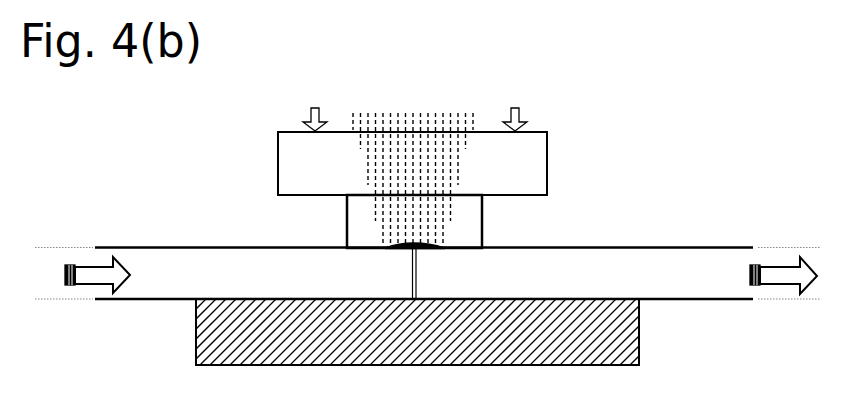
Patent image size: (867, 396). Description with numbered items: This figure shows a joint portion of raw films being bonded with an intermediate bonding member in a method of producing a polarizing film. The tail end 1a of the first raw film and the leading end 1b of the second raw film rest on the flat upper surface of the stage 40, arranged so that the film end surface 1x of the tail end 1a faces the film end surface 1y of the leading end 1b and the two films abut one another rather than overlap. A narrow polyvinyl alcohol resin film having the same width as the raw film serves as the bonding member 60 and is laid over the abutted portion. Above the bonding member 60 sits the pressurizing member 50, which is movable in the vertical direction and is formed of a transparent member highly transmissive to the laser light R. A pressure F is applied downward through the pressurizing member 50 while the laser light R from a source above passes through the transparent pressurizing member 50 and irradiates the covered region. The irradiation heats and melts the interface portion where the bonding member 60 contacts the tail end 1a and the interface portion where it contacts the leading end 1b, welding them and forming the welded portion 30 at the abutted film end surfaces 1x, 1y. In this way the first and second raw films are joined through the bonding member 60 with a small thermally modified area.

The tail end of the first raw film 1a is at (633, 243).
The leading end of the second raw film 1b is at (196, 234).
The film end surface of the tail end 1x is at (418, 290).
The film end surface of the leading end 1y is at (411, 262).
The welded portion 30 is at (372, 240).
The stage 40 is at (624, 299).
The pressurizing member 50 is at (538, 131).
The bonding member 60 is at (492, 226).
The laser light R is at (353, 158).
The pressing force F is at (415, 106).